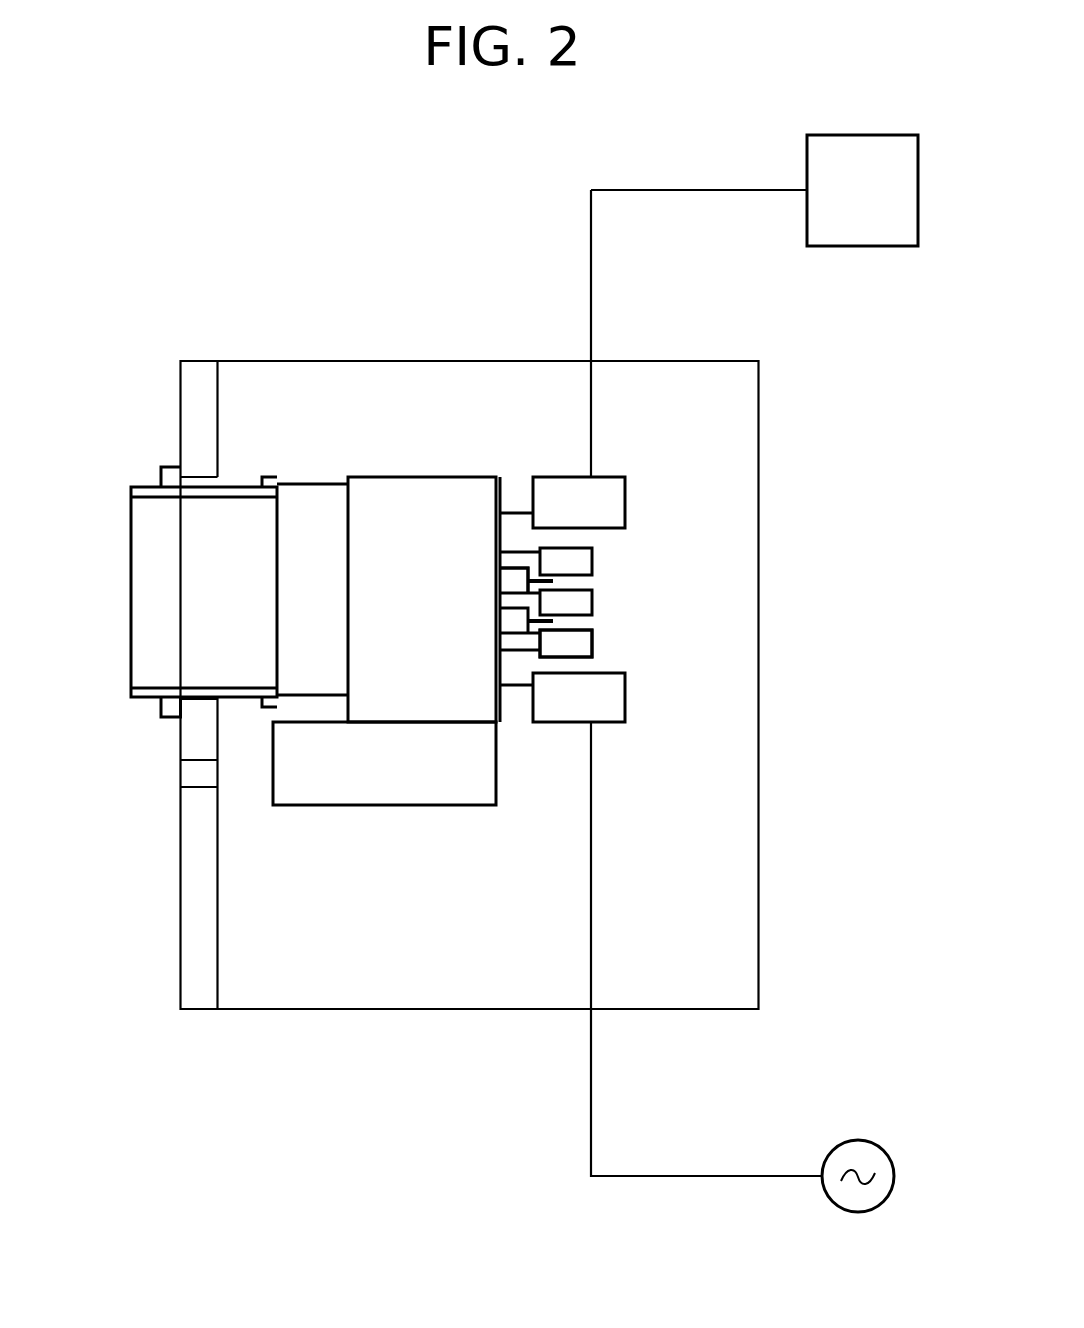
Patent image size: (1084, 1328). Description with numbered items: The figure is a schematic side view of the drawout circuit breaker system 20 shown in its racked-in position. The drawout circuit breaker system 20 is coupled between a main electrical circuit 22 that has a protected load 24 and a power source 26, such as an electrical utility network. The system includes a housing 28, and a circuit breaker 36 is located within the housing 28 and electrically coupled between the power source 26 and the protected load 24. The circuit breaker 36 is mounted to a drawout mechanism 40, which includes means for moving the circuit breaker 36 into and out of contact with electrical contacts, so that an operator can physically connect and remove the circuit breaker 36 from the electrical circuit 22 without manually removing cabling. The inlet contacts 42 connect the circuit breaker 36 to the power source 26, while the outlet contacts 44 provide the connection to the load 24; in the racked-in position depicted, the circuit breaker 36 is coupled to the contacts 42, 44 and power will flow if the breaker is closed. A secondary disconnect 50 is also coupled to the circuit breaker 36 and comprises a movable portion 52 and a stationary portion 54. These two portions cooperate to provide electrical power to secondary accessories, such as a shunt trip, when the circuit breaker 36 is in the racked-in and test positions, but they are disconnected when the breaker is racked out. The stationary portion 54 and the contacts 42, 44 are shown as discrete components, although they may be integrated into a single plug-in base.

The drawout circuit breaker system 20 is at (128, 382).
The main electrical circuit 22 is at (648, 189).
The protected load 24 is at (860, 246).
The power source 26 is at (853, 1212).
The housing 28 is at (250, 361).
The circuit breaker 36 is at (425, 477).
The drawout mechanism 40 is at (380, 805).
The inlet contacts 42 is at (625, 698).
The outlet contacts 44 is at (625, 502).
The secondary disconnect 50 is at (658, 589).
The movable portion 52 is at (520, 652).
The stationary portion 54 is at (592, 642).